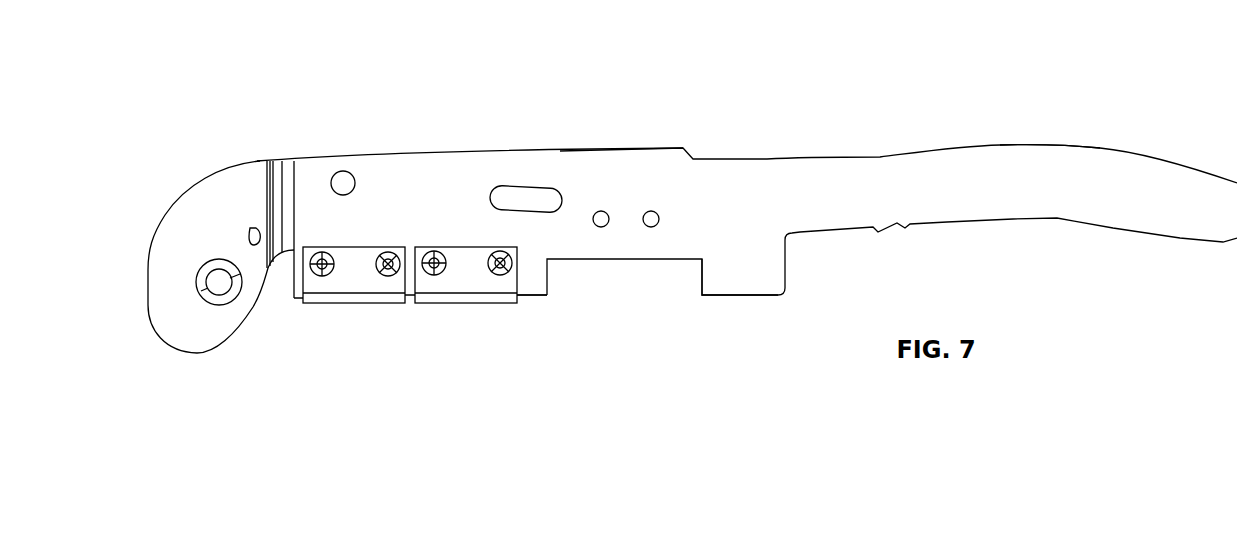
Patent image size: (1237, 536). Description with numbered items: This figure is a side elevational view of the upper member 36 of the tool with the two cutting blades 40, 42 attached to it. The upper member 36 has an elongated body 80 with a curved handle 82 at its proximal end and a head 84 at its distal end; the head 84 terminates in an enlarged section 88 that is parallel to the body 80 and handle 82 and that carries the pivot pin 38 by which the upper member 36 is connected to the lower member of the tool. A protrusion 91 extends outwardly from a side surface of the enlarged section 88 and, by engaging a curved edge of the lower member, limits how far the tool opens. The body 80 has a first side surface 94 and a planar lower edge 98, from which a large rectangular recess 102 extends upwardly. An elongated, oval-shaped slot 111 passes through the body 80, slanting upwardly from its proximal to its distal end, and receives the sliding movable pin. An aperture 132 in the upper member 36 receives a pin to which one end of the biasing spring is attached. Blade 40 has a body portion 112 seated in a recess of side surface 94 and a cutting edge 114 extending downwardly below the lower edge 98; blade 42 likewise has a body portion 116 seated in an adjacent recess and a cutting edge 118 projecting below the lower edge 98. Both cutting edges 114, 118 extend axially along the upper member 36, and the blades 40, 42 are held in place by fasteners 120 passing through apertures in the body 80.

The upper member 36 is at (739, 137).
The pivot pin 38 is at (219, 284).
The cutting blade 40 is at (345, 239).
The cutting blade 42 is at (480, 237).
The body 80 is at (608, 163).
The curved handle 82 is at (1020, 190).
The head 84 is at (212, 193).
The enlarged section 88 is at (182, 323).
The protrusion 91 is at (251, 227).
The first side surface 94 is at (546, 245).
The planar lower edge 98 is at (532, 298).
The recess 102 is at (663, 262).
The oval-shaped slot 111 is at (512, 185).
The body portion 112 is at (345, 277).
The cutting edge 114 is at (347, 305).
The body portion 116 is at (470, 280).
The cutting edge 118 is at (488, 305).
The fasteners 120 is at (320, 253).
The aperture 132 is at (347, 172).